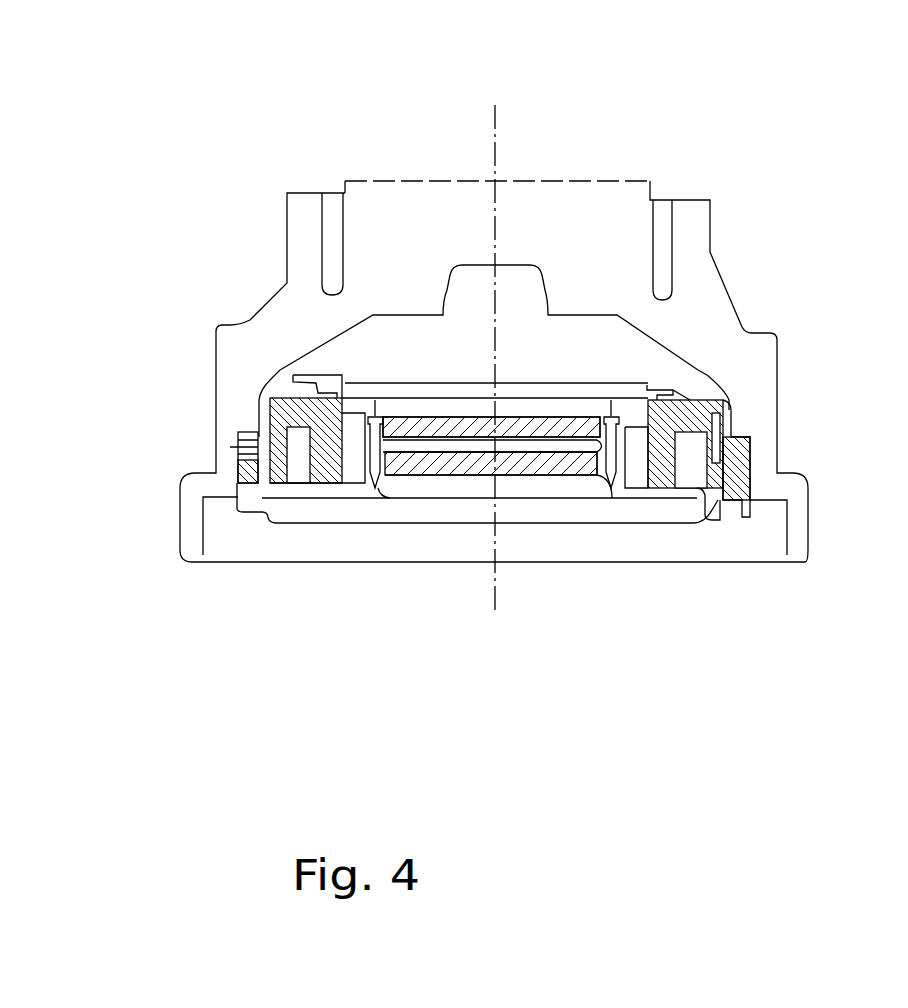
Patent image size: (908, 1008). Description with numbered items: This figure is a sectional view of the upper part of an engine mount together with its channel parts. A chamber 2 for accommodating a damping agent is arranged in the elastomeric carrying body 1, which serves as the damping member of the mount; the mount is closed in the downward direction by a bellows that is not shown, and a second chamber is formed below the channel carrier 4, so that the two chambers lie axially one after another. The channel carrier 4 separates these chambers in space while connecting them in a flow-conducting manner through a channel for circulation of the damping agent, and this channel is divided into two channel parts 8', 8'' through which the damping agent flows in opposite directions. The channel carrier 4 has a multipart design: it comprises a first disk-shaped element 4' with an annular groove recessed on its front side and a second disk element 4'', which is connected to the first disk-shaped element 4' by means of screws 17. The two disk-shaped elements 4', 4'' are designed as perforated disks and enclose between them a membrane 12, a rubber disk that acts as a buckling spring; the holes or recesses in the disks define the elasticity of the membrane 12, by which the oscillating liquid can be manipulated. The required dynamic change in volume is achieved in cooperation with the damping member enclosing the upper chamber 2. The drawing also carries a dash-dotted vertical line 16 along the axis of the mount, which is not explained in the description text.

The elastomeric carrying body 1 is at (290, 320).
The chamber 2 is at (637, 363).
The channel carrier 4 is at (563, 572).
The first disk-shaped element 4' is at (491, 597).
The second disk element 4'' is at (568, 257).
The channel part 8' is at (415, 557).
The channel part 8'' is at (752, 434).
The membrane 12 is at (510, 445).
The central axis 16 is at (495, 135).
The screws 17 is at (378, 450).